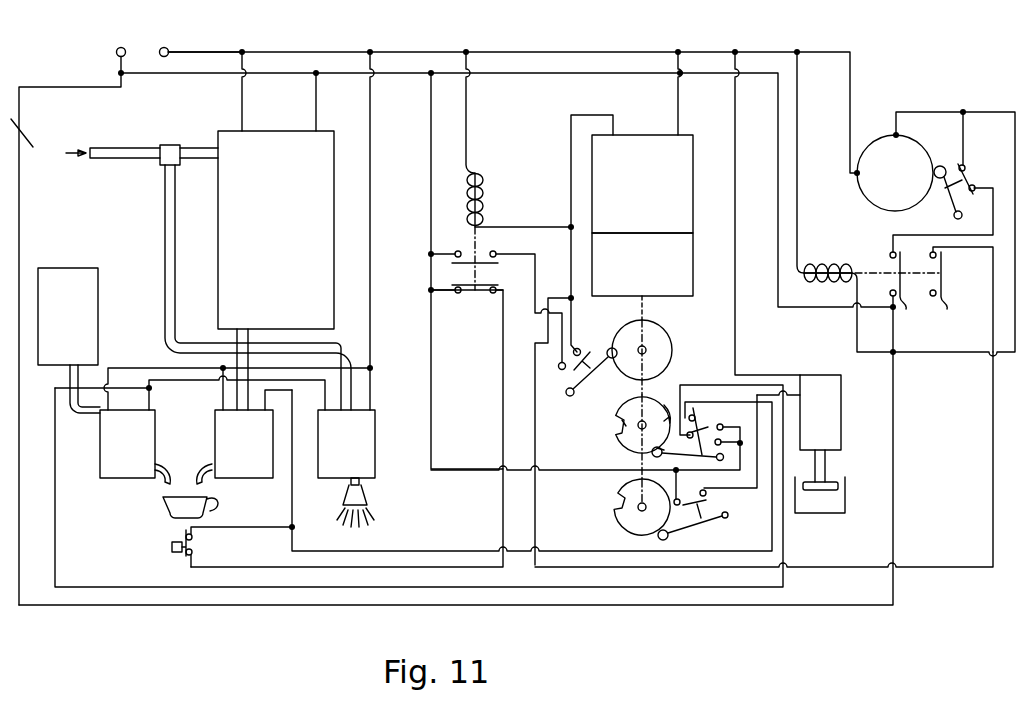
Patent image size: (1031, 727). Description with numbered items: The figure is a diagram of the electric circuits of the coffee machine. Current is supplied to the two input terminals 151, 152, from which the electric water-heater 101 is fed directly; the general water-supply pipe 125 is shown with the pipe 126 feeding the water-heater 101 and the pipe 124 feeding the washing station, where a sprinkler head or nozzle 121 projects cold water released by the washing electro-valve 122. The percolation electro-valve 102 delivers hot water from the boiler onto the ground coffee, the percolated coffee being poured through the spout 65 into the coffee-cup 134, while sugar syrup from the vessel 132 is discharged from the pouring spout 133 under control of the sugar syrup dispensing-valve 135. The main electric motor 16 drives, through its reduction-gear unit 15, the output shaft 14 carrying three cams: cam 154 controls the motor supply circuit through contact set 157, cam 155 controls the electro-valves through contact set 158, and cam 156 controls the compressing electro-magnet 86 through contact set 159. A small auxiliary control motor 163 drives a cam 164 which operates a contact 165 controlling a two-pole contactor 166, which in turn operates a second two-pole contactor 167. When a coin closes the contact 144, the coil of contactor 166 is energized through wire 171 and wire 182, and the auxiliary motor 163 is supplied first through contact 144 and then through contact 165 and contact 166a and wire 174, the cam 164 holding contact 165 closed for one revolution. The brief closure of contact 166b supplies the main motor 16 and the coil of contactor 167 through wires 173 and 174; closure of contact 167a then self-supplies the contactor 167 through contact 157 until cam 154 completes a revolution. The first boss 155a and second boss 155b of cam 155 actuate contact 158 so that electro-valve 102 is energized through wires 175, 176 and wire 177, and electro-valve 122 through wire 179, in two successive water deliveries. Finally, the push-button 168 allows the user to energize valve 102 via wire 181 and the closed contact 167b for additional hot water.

The output shaft 14 is at (645, 308).
The reduction-gear unit 15 is at (652, 272).
The main electric motor 16 is at (652, 193).
The spout 65 is at (207, 476).
The electro-magnet 86 is at (828, 416).
The electric water-heater 101 is at (286, 226).
The percolation electro-valve 102 is at (253, 444).
The sprinkler head or nozzle 121 is at (368, 502).
The washing electro-valve 122 is at (356, 444).
The pipe 124 is at (338, 347).
The general water-supply pipe 125 is at (148, 148).
The pipe 126 is at (195, 148).
The vessel 132 is at (80, 319).
The pouring spout 133 is at (158, 482).
The coffee-cup 134 is at (163, 511).
The sugar syrup dispensing-valve 135 is at (139, 444).
The contact 144 is at (26, 130).
The input terminal 151 is at (119, 51).
The input terminal 152 is at (166, 47).
The cam 154 is at (668, 336).
The cam 155 is at (616, 440).
The first small-length boss 155a is at (634, 392).
The second boss 155b is at (614, 423).
The cam 156 is at (616, 519).
The contact set 157 is at (561, 381).
The contact set 158 is at (719, 418).
The contact set 159 is at (712, 503).
The auxiliary control motor 163 is at (885, 129).
The cam 164 is at (926, 155).
The contact 165 is at (967, 175).
The contactor 166 is at (830, 264).
The contact 166a is at (906, 312).
The contact 166b is at (946, 312).
The contactor 167 is at (485, 198).
The contact 167a is at (490, 250).
The contact 167b is at (490, 284).
The push-button 168 is at (175, 560).
The wire 171 is at (270, 52).
The wire 173 is at (571, 267).
The wire 174 is at (284, 73).
The wire 175 is at (371, 296).
The wire 176 is at (432, 380).
The wire 177 is at (430, 551).
The wire 179 is at (422, 587).
The wire 181 is at (425, 568).
The wire 182 is at (424, 606).